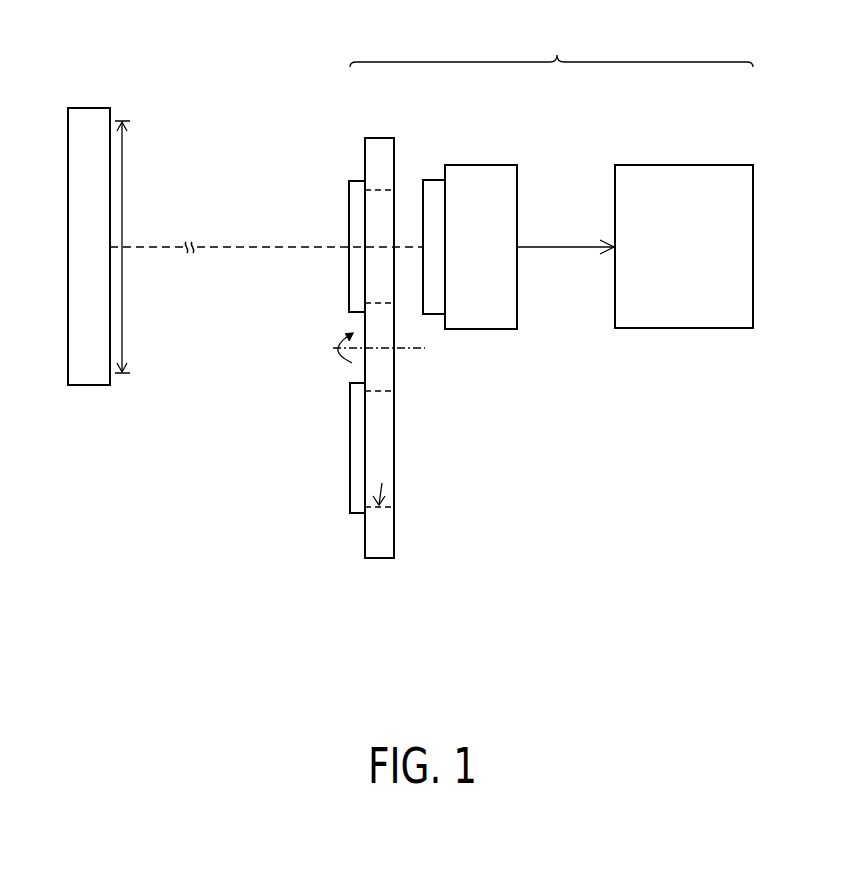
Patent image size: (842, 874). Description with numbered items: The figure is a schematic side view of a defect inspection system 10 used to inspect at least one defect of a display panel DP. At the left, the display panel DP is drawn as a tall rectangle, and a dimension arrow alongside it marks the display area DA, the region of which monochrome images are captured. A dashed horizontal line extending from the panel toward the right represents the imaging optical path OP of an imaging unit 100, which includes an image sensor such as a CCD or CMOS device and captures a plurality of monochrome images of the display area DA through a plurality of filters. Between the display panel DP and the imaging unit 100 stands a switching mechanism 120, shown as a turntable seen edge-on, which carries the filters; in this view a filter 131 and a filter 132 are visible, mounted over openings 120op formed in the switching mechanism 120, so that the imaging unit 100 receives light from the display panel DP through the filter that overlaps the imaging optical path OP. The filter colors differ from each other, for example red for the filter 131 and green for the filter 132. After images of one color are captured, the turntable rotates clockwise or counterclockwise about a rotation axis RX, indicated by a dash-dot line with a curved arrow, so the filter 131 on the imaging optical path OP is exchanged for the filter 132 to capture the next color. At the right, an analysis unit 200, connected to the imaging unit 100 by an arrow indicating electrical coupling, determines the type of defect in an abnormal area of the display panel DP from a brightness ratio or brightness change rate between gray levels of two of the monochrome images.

The defect inspection system 10 is at (551, 44).
The imaging unit 100 is at (480, 188).
The analysis unit 200 is at (687, 187).
The switching mechanism 120 is at (379, 537).
The openings 120op is at (382, 483).
The filter 131 is at (358, 198).
The filter 132 is at (358, 483).
The rotation axis RX is at (411, 349).
The display panel DP is at (88, 130).
The display area DA is at (139, 247).
The imaging optical path OP is at (163, 250).